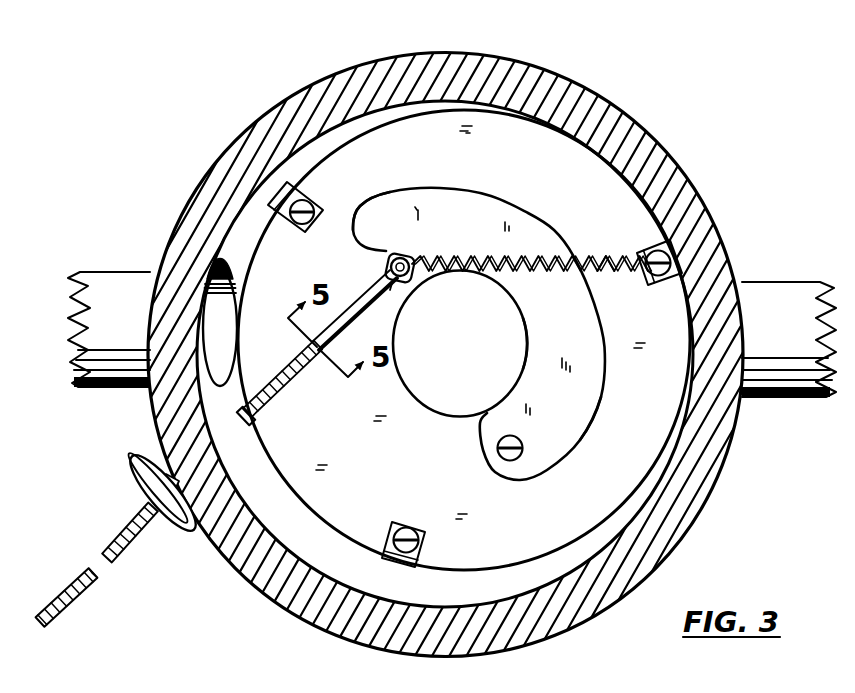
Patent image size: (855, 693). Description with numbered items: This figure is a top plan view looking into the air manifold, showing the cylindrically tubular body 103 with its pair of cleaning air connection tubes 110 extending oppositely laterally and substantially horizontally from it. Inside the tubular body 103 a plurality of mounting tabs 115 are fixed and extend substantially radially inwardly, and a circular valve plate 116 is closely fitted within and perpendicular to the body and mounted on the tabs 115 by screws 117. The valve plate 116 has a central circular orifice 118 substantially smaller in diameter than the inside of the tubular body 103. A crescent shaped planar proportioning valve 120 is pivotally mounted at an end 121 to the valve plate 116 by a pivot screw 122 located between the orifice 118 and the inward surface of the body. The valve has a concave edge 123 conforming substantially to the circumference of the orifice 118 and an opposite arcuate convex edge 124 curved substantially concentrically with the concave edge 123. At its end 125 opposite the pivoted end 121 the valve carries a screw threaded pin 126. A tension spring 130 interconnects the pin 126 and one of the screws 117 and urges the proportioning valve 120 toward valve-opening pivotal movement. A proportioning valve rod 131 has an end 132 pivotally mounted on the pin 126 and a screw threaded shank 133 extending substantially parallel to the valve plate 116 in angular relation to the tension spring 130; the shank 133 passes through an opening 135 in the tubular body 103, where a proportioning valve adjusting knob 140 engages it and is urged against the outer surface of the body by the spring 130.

The tubular body 103 is at (533, 66).
The cleaning air connection tubes 110 is at (127, 336).
The mounting tabs 115 is at (305, 200).
The valve plate 116 is at (572, 196).
The screws 117 is at (296, 232).
The orifice 118 is at (449, 332).
The proportioning valve 120 is at (476, 244).
The end 121 is at (590, 424).
The pivot screw 122 is at (500, 458).
The concave edge 123 is at (526, 343).
The convex edge 124 is at (558, 241).
The end 125 is at (374, 208).
The screw threaded pin 126 is at (386, 265).
The tension spring 130 is at (578, 273).
The proportioning valve rod 131 is at (291, 356).
The end 132 is at (391, 284).
The screw threaded shank 133 is at (77, 597).
The opening 135 is at (256, 421).
The proportioning valve adjusting knob 140 is at (140, 467).